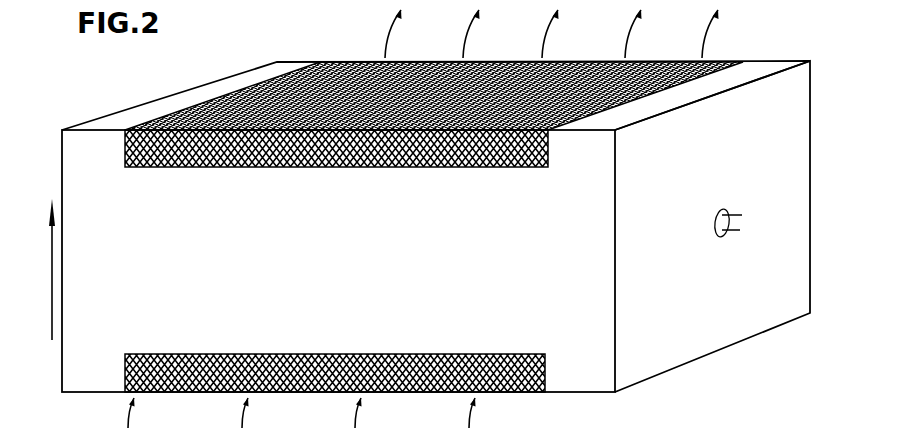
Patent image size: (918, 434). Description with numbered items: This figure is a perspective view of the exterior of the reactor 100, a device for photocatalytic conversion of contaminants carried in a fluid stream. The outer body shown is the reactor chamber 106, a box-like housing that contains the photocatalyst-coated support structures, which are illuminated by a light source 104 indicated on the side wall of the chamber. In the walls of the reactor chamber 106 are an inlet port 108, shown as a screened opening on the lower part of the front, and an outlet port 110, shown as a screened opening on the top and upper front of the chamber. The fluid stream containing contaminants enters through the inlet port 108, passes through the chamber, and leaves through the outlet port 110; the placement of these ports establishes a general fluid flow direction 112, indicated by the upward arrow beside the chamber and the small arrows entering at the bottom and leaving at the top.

The reactor 100 is at (97, 93).
The light source 104 is at (725, 210).
The reactor chamber 106 is at (811, 86).
The inlet port 108 is at (313, 392).
The outlet port 110 is at (285, 82).
The fluid flow direction 112 is at (41, 269).